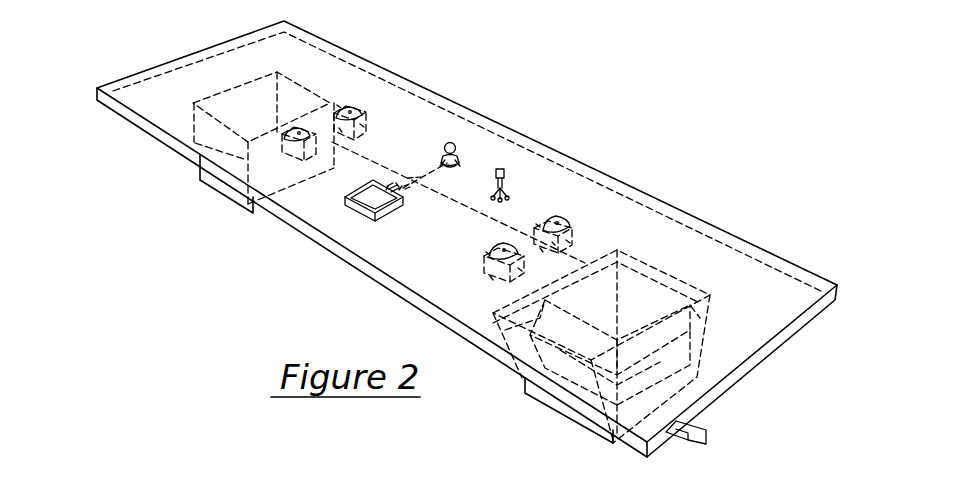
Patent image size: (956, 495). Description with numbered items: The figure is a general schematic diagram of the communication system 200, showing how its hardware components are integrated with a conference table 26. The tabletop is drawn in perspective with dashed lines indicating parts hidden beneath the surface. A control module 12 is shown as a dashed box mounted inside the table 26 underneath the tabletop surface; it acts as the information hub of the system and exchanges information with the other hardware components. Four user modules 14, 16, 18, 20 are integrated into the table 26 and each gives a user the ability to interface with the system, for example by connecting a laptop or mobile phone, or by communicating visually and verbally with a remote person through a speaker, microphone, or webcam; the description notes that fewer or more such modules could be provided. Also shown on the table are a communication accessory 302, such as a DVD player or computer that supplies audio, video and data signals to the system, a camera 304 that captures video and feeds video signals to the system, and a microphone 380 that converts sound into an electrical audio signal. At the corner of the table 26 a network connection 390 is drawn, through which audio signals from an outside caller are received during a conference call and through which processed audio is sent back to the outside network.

The tactile feedback system 200 is at (586, 104).
The conference table 26 is at (743, 342).
The user module 14 is at (294, 140).
The user module 16 is at (353, 110).
The user module 18 is at (556, 216).
The user module 20 is at (492, 260).
The control module 12 is at (642, 278).
The communication accessory 302 is at (392, 212).
The camera 304 is at (450, 142).
The microphone 380 is at (500, 167).
The network connection 390 is at (693, 427).